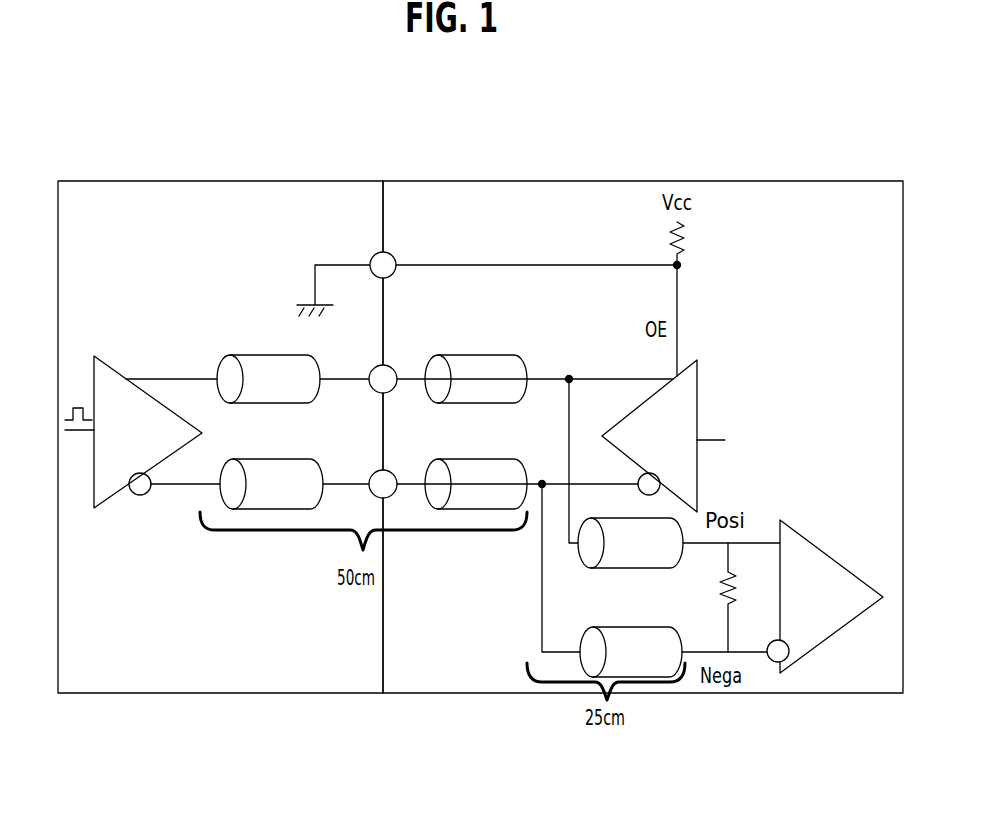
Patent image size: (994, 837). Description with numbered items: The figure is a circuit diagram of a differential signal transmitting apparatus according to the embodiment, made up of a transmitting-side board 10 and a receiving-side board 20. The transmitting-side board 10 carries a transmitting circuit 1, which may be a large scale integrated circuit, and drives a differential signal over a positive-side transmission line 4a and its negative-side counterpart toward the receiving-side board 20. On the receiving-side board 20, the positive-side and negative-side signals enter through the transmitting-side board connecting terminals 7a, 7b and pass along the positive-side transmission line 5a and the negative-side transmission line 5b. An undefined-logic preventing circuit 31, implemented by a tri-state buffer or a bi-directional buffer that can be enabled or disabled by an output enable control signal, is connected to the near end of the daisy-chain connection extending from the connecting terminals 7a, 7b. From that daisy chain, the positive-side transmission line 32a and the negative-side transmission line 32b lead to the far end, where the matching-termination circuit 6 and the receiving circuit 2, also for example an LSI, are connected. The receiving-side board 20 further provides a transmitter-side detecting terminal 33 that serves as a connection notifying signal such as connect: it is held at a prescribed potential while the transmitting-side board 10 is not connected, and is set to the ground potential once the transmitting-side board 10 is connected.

The transmitting circuit 1 is at (92, 510).
The receiving circuit 2 is at (794, 522).
The transmission line (positive side) 4a is at (232, 357).
The transmission line (positive side) 5a is at (440, 357).
The transmission line (negative side) 5b is at (441, 509).
The matching-termination circuit 6 is at (737, 607).
The transmitting-side board connecting terminal (positive side) 7a is at (373, 389).
The transmitting-side board connecting terminal (negative side) 7b is at (374, 494).
The transmitting-side board 10 is at (80, 181).
The receiving-side board 20 is at (408, 181).
The undefined-logic preventing circuit 31 is at (697, 360).
The transmission line (positive side) 32a is at (580, 556).
The transmission line (negative side) 32b is at (580, 667).
The transmitter-side detecting terminal 33 is at (374, 257).